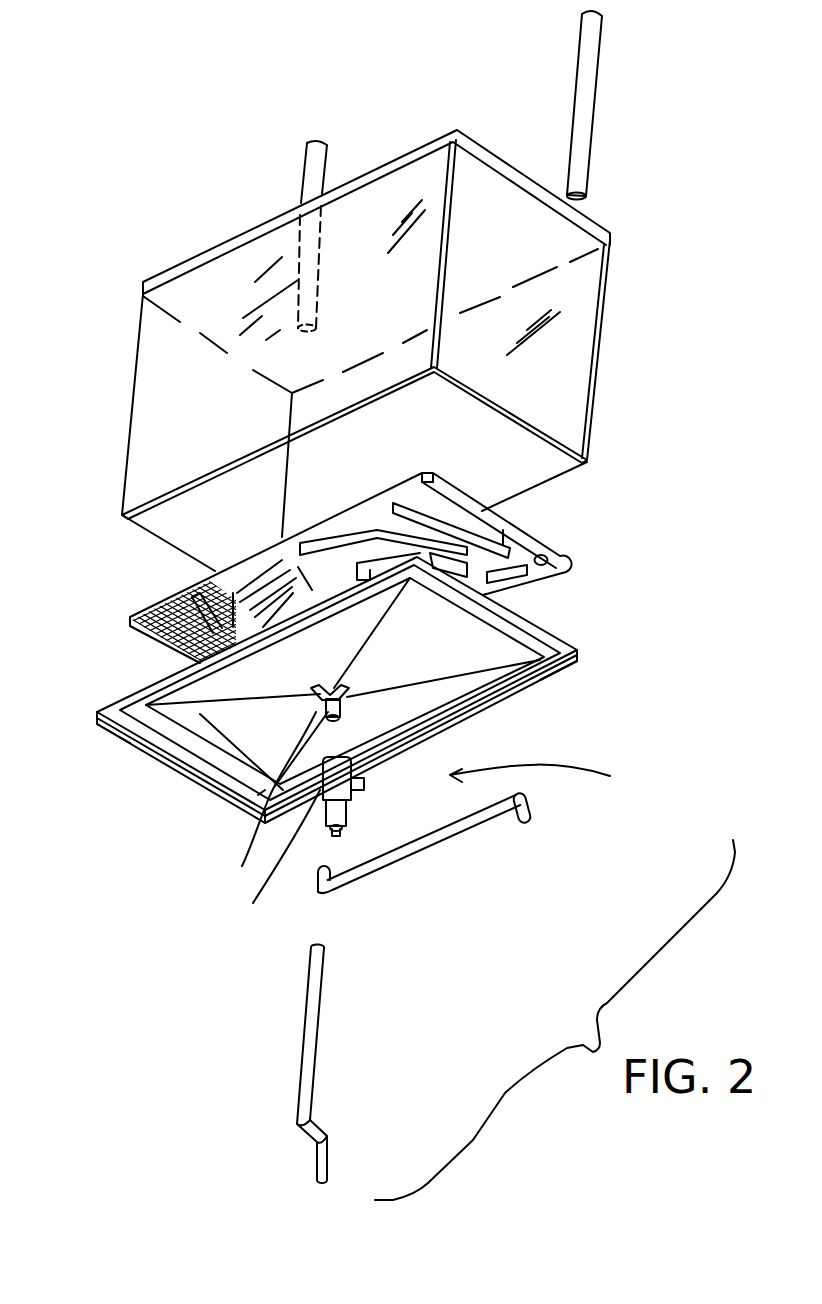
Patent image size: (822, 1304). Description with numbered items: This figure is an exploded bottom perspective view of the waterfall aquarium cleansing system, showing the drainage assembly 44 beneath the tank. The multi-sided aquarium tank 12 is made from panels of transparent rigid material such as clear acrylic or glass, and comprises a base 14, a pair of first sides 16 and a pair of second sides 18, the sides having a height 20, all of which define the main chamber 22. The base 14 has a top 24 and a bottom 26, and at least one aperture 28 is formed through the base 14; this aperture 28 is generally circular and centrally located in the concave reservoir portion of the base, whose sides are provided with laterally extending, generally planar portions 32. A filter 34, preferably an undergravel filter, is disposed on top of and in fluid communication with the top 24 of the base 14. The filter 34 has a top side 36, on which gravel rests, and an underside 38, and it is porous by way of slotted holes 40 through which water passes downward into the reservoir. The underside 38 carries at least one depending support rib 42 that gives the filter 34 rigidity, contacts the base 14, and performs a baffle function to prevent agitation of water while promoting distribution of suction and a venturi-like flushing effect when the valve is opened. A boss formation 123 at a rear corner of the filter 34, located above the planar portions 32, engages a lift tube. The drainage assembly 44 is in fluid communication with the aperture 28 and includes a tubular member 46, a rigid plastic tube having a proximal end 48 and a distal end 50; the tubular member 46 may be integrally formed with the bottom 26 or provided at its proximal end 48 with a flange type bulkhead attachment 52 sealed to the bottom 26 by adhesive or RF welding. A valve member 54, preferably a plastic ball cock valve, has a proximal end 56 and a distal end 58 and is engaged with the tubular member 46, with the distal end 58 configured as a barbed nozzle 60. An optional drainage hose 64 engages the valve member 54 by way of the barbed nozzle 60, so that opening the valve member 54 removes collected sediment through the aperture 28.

The aquarium tank 12 is at (583, 287).
The base 14 is at (540, 630).
The first sides 16 is at (197, 477).
The second sides 18 is at (553, 430).
The height 20 is at (443, 167).
The main chamber 22 is at (167, 360).
The top 24 is at (133, 693).
The bottom 26 is at (185, 716).
The aperture 28 is at (497, 703).
The generally planar portions 32 is at (517, 648).
The filter 34 is at (503, 540).
The top side 36 is at (150, 600).
The underside 38 is at (522, 577).
The slotted holes 40 is at (147, 638).
The support rib 42 is at (508, 548).
The drainage assembly 44 is at (543, 782).
The tubular member 46 is at (322, 708).
The proximal end 48 is at (343, 695).
The distal end 50 is at (258, 795).
The flange type bulkhead attachment 52 is at (353, 702).
The valve member 54 is at (258, 848).
The proximal end 56 is at (367, 754).
The distal end 58 is at (345, 812).
The barbed nozzle 60 is at (258, 896).
The drainage hose 64 is at (442, 837).
The boss formation 123 is at (548, 558).